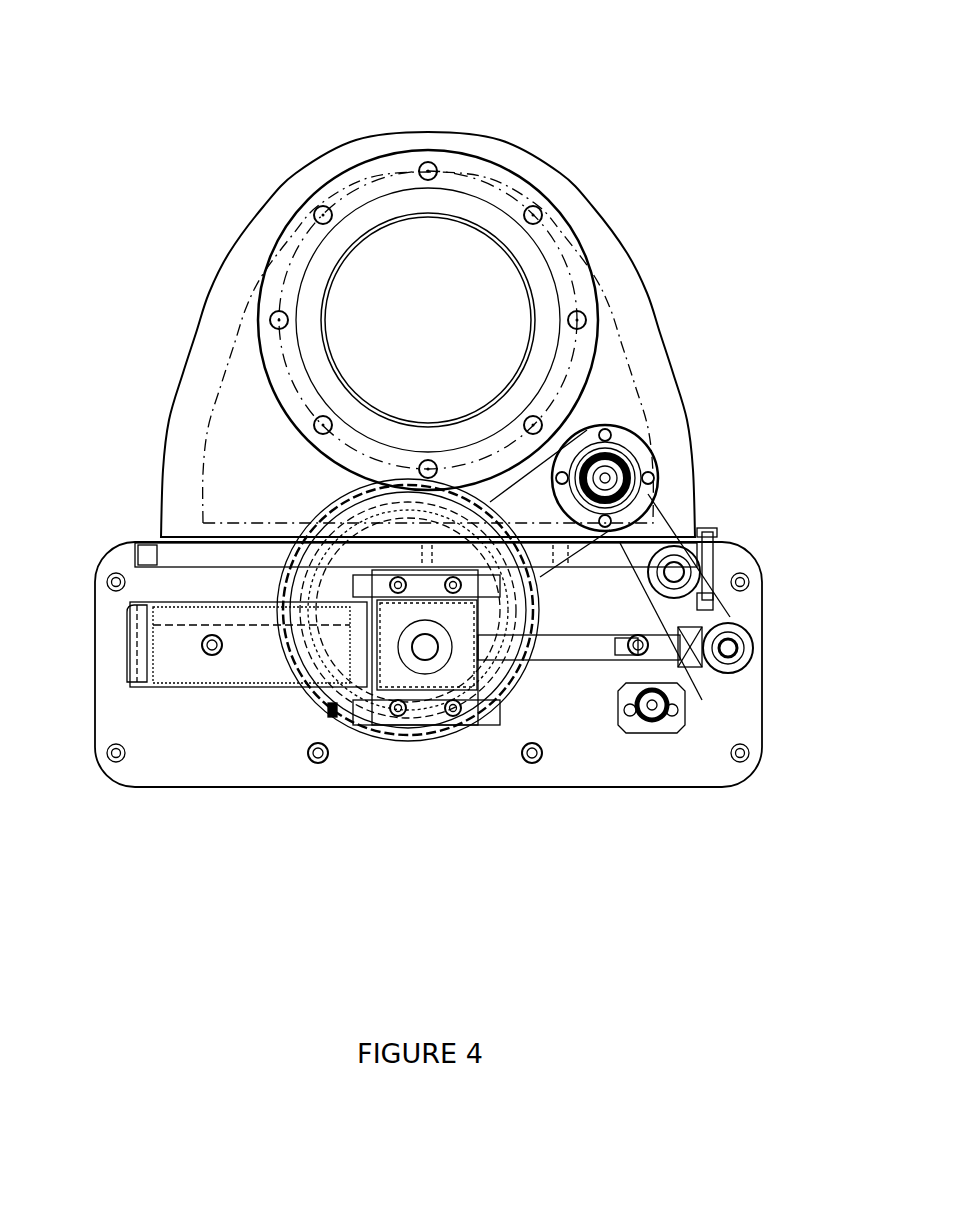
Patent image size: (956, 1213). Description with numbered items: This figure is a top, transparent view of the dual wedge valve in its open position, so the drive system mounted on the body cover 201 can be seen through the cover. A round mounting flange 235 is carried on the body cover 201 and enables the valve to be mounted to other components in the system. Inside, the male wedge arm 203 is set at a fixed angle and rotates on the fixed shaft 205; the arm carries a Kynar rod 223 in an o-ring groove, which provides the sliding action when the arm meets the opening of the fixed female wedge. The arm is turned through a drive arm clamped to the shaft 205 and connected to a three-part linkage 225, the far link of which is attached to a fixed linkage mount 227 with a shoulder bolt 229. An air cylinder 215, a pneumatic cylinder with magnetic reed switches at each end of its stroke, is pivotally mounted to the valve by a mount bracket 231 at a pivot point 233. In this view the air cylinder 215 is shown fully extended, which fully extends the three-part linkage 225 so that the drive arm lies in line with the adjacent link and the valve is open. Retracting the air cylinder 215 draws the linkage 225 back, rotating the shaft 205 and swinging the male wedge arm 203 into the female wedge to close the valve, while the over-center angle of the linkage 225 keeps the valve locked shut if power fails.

The body cover 201 is at (657, 302).
The male wedge arm 203 is at (316, 506).
The shaft 205 is at (641, 442).
The air cylinder 215 is at (187, 663).
The Kynar rod 223 is at (333, 708).
The three-part linkage 225 is at (688, 603).
The fixed linkage mount 227 is at (630, 727).
The shoulder bolt 229 is at (662, 718).
The mount bracket 231 is at (477, 727).
The pivot point 233 is at (427, 655).
The mounting flange 235 is at (274, 269).